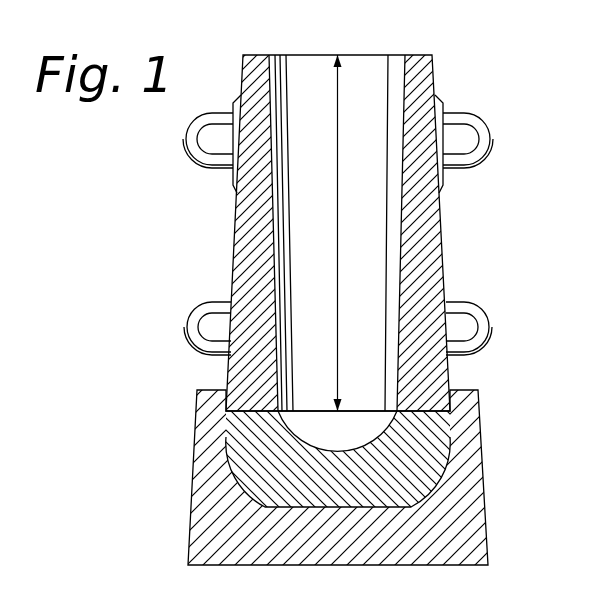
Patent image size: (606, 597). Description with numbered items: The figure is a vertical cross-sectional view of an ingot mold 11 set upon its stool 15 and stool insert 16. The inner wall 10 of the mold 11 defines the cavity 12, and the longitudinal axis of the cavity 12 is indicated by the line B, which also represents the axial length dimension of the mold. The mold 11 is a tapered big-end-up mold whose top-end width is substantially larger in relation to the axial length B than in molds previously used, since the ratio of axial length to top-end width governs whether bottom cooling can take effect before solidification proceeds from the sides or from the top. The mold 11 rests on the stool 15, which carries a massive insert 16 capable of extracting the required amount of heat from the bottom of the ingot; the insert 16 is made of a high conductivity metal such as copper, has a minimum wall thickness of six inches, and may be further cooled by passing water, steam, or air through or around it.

The inner wall 10 is at (388, 160).
The mold 11 is at (445, 240).
The cavity 12 is at (352, 82).
The stool 15 is at (458, 502).
The stool insert 16 is at (415, 442).
The longitudinal axis B is at (337, 207).